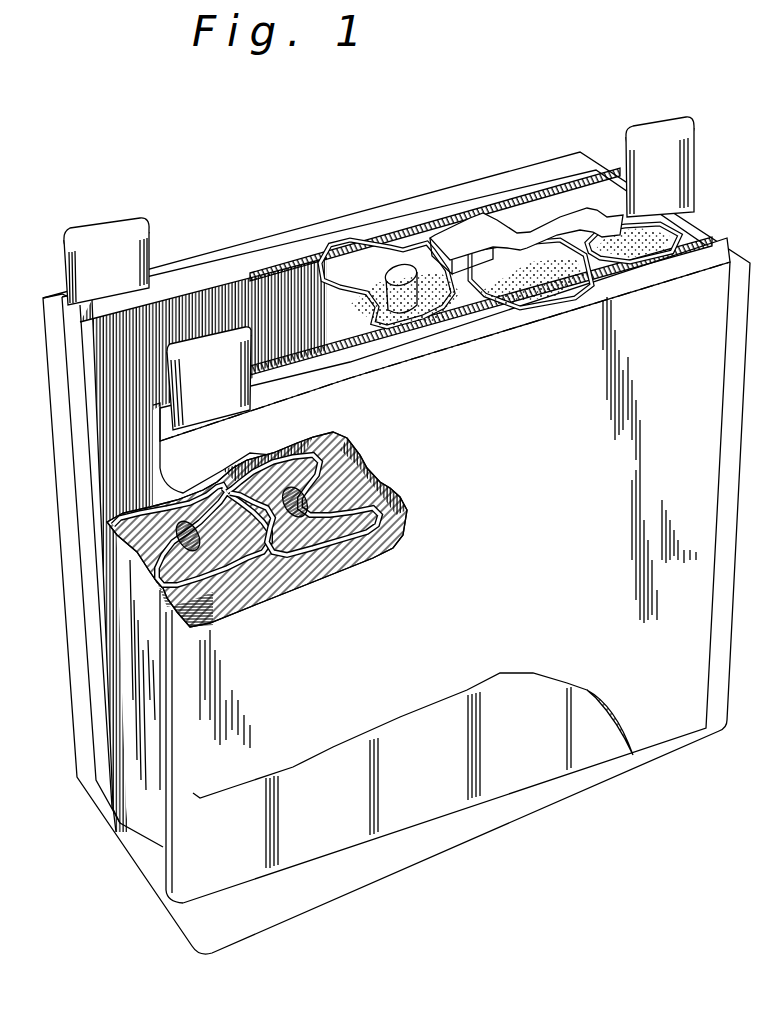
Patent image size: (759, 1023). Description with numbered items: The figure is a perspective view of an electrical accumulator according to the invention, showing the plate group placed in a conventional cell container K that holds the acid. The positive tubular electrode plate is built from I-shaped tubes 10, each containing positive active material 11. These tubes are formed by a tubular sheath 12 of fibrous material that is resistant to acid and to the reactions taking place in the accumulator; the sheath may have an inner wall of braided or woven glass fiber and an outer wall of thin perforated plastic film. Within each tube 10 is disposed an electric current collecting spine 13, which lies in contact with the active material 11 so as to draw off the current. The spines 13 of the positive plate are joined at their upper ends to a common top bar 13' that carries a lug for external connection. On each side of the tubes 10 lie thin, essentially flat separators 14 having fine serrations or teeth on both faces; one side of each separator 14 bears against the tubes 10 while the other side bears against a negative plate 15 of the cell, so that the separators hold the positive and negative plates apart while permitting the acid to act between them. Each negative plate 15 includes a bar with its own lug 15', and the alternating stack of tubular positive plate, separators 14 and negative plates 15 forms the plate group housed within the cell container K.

The cell container K is at (593, 787).
The I-shaped tubes 10 is at (357, 277).
The positive active material 11 is at (373, 277).
The tubular sheath 12 is at (347, 307).
The electric current collecting spine 13 is at (217, 394).
The top bar 13' is at (526, 178).
The separator 14 is at (257, 270).
The negative plate 15 is at (198, 294).
The lug 15' is at (83, 223).